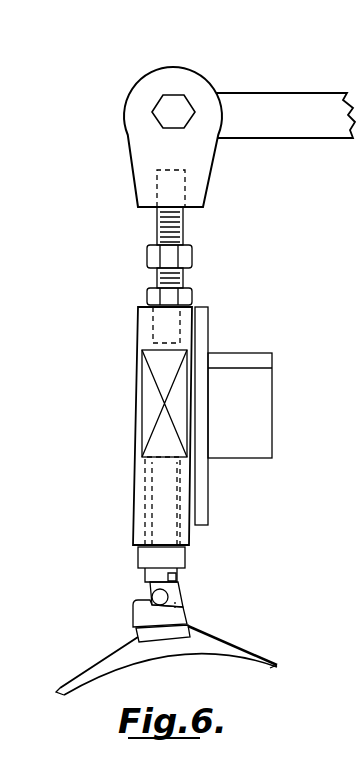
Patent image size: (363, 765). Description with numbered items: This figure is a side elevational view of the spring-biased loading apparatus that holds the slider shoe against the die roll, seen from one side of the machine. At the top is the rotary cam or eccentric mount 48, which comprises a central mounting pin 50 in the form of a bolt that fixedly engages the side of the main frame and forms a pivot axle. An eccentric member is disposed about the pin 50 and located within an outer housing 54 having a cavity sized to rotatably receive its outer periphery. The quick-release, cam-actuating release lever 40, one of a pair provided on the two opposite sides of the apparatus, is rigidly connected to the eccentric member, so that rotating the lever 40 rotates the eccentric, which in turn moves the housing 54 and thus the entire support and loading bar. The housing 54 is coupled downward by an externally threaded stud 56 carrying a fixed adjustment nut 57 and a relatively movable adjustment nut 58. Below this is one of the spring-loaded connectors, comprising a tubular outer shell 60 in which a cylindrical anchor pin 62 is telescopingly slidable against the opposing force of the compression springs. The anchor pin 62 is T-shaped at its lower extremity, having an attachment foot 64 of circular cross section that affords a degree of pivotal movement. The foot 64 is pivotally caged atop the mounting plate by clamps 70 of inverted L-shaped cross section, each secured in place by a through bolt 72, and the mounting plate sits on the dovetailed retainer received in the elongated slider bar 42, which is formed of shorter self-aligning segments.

The release lever 40 is at (262, 100).
The slider bar 42 is at (213, 646).
The rotary cam or eccentric mount 48 is at (137, 66).
The central mounting pin 50 is at (171, 102).
The outer housing 54 is at (205, 162).
The externally threaded stud 56 is at (186, 228).
The fixed adjustment nut 57 is at (190, 258).
The movable adjustment nut 58 is at (192, 296).
The tubular outer shell 60 is at (138, 366).
The cylindrical anchor pin 62 is at (140, 556).
The attachment foot 64 is at (148, 620).
The clamp 70 is at (183, 594).
The through bolt 72 is at (178, 577).